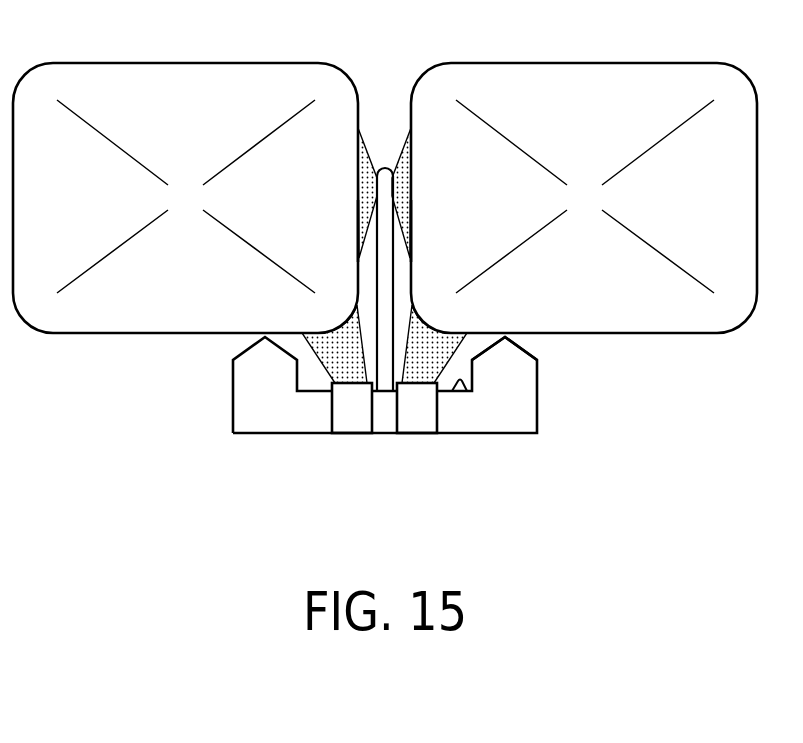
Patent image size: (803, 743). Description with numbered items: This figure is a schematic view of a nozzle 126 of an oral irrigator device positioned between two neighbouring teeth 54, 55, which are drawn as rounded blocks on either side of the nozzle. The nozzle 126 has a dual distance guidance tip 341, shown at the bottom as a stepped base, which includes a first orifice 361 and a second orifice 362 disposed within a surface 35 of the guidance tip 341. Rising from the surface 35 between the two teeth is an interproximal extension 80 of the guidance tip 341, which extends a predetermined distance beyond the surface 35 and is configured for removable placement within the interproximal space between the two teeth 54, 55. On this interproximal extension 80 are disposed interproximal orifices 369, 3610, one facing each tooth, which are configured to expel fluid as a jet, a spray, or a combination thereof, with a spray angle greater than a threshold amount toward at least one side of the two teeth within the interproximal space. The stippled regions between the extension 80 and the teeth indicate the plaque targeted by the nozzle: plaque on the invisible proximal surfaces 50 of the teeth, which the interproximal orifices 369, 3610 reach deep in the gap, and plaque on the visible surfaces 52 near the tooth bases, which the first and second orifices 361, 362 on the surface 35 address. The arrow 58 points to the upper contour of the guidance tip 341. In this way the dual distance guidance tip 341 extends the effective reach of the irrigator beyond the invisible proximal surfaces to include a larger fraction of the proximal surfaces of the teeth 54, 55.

The neighbouring tooth 55 is at (171, 113).
The neighbouring tooth 54 is at (570, 113).
The interproximal extension 80 is at (386, 166).
The interproximal orifice 369 is at (358, 192).
The interproximal orifice 3610 is at (413, 191).
The invisible surface plaque 50 is at (358, 222).
The visible surface plaque 52 is at (333, 328).
The dual distance guidance tip 341 is at (515, 418).
The base protrusion 58 is at (524, 341).
The first orifice 361 is at (352, 420).
The second orifice 362 is at (417, 420).
The surface 35 is at (470, 392).
The nozzle 126 is at (455, 255).